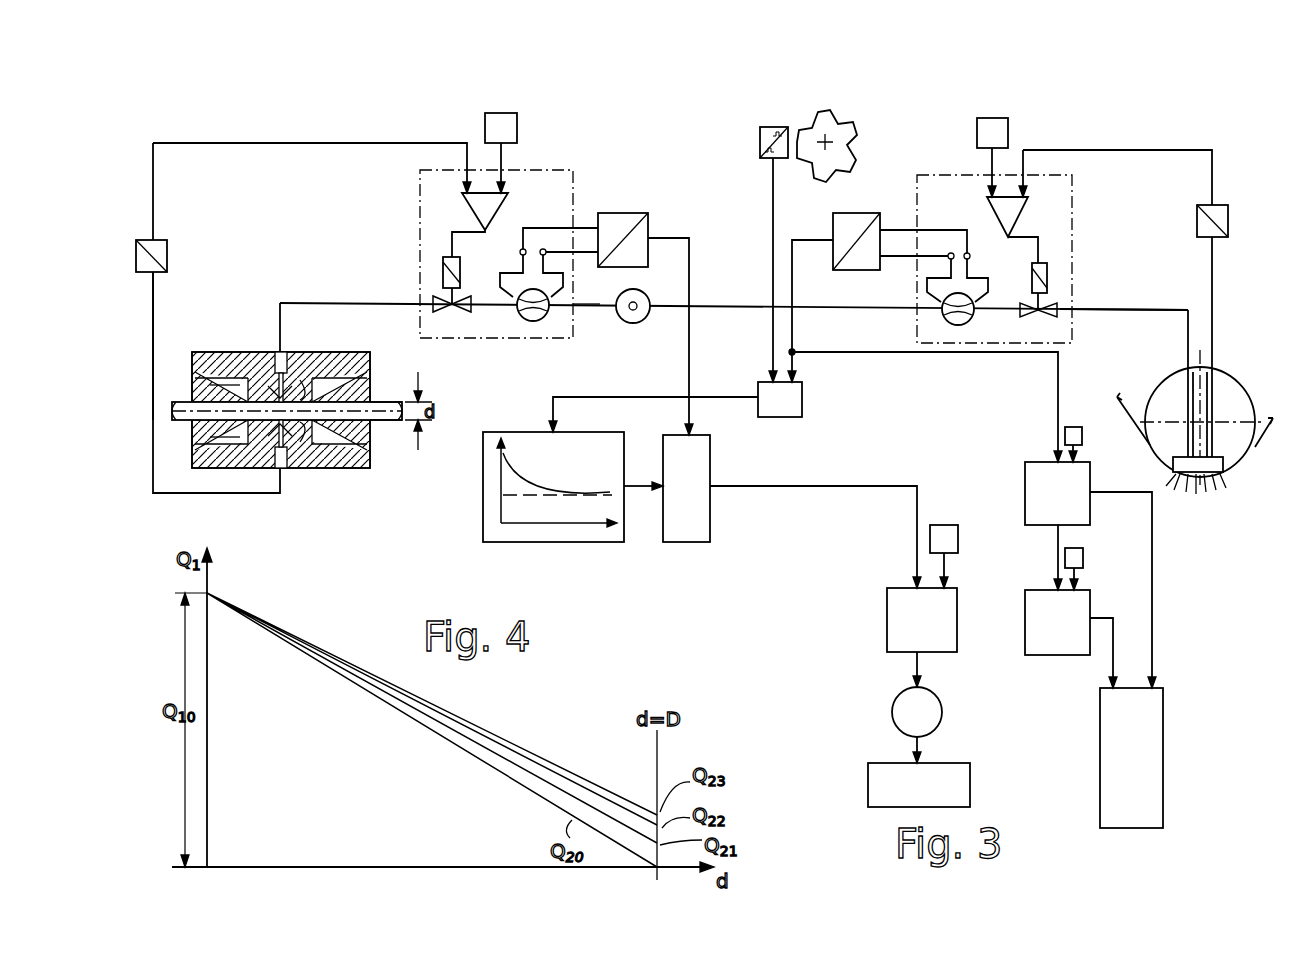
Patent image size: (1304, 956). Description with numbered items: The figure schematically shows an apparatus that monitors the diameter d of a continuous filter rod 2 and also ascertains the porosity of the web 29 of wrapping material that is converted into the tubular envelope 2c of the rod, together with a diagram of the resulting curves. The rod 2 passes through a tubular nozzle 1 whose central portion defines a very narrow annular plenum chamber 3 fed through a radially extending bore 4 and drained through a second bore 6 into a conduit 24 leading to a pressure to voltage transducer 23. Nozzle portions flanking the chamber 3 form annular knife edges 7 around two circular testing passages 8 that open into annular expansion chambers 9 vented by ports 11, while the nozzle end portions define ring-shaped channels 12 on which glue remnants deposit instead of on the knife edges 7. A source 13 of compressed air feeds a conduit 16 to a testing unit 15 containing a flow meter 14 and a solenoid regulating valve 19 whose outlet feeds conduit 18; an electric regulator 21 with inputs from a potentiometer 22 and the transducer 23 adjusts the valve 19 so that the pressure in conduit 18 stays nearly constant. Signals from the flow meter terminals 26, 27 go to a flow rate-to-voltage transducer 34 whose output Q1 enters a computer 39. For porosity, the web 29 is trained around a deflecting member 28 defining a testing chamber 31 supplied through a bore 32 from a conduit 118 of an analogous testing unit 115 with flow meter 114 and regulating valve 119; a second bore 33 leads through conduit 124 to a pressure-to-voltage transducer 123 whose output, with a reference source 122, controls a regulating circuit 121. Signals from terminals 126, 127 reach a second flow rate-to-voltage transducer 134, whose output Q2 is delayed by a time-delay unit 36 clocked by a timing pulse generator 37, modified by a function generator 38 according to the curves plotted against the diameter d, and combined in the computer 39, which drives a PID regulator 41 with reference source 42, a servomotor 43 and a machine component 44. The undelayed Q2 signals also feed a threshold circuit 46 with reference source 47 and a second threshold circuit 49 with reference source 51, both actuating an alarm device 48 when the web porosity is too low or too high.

The tubular nozzle 1 is at (233, 344).
The filter rod 2 is at (176, 424).
The tubular envelope 2c is at (380, 408).
The plenum chamber 3 is at (312, 352).
The radially extending bore 4 is at (288, 352).
The second radially extending bore 6 is at (296, 468).
The annular knife edges 7 is at (258, 352).
The testing passages 8 is at (281, 468).
The expansion chambers 9 is at (252, 466).
The ports 11 is at (212, 352).
The ring-shaped channels 12 is at (220, 468).
The source of compressed gaseous testing fluid 13 is at (640, 322).
The flow meter 14 is at (520, 323).
The testing unit 15 is at (573, 170).
The conduit 16 is at (591, 306).
The conduit 18 is at (340, 303).
The regulating valve 19 is at (432, 268).
The electric regulator 21 is at (476, 206).
The potentiometer 22 is at (510, 128).
The pressure to voltage transducer 23 is at (167, 252).
The conduit 24 is at (153, 332).
The terminal of flow meter 26 is at (520, 253).
The terminal of flow meter 27 is at (543, 249).
The deflecting member 28 is at (1234, 398).
The web of wrapping material 29 is at (1270, 430).
The testing chamber 31 is at (1228, 474).
The bore 32 is at (1186, 388).
The second bore 33 is at (1212, 386).
The flow rate-to-voltage transducer 34 is at (605, 218).
The time-delay unit 36 is at (804, 400).
The timing pulse generator 37 is at (748, 166).
The function generator 38 is at (483, 514).
The computer 39 is at (712, 520).
The PID regulator 41 is at (892, 628).
The source of reference signal 42 is at (942, 532).
The servomotor 43 is at (900, 718).
The component of filter rod making machine 44 is at (962, 788).
The threshold circuit 46 is at (1036, 470).
The source of reference signals QMIN 47 is at (1076, 427).
The alarm device 48 is at (1112, 750).
The second threshold circuit 49 is at (1053, 640).
The source of reference signals QMAX 51 is at (1080, 560).
The flow meter 114 is at (946, 335).
The testing unit 115 is at (1068, 175).
The conduit 118 is at (1125, 310).
The regulating valve 119 is at (1060, 279).
The regulating circuit 121 is at (1030, 214).
The source of reference signals 122 is at (1004, 130).
The pressure-to-voltage transducer 123 is at (1220, 206).
The conduit 124 is at (1213, 300).
The terminal of flow meter 126 is at (948, 252).
The terminal of flow meter 127 is at (967, 253).
The second flow rate-to-voltage transducer 134 is at (833, 233).